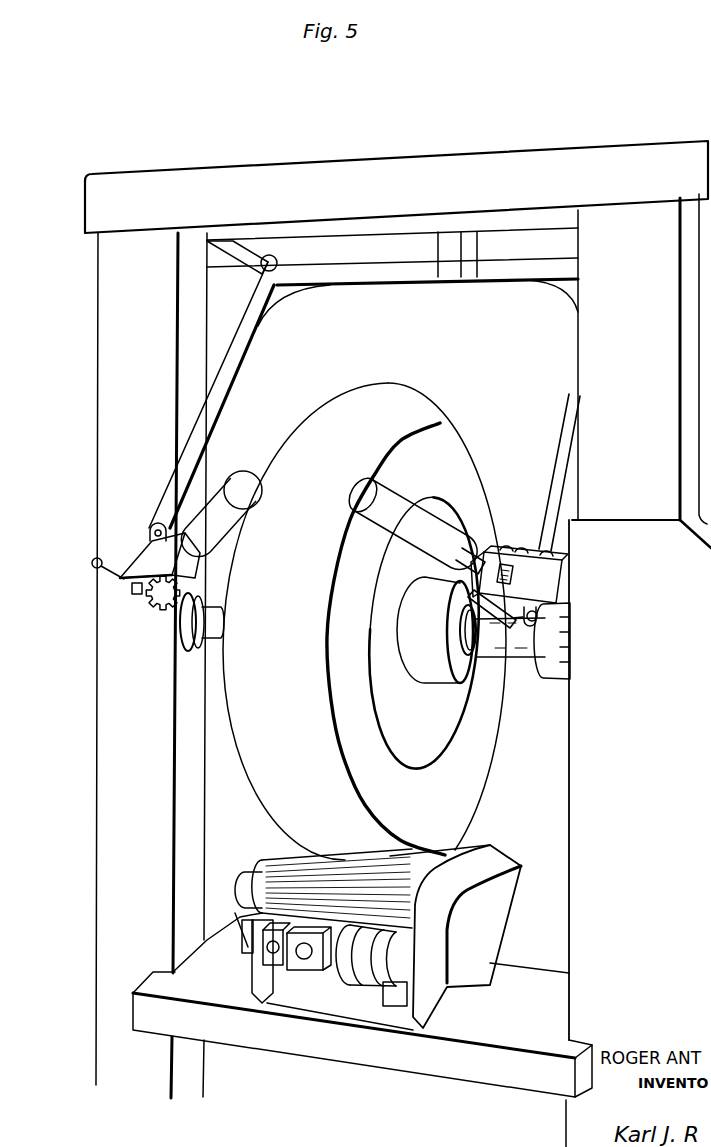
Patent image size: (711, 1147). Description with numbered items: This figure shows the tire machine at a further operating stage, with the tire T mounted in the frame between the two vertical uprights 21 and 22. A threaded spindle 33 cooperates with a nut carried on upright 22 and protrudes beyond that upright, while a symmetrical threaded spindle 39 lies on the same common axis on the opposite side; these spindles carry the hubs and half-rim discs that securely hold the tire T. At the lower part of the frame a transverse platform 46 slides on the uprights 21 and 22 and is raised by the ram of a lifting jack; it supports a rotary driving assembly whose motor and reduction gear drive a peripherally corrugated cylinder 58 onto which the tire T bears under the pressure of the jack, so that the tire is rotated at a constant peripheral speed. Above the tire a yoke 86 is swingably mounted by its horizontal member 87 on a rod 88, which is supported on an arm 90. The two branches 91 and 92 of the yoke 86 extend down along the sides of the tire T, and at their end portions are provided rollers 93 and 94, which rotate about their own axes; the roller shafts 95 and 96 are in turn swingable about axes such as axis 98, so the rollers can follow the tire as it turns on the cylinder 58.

The vertical upright 21 is at (131, 276).
The vertical upright 22 is at (653, 222).
The threaded spindle 33 is at (515, 640).
The threaded spindle 39 is at (215, 626).
The transverse platform 46 is at (370, 1046).
The peripherally corrugated cylinder 58 is at (283, 880).
The yoke 86 is at (436, 288).
The horizontal member 87 is at (316, 277).
The rod 88 is at (263, 258).
The arm 90 is at (233, 250).
The branch of yoke 91 is at (567, 463).
The branch of yoke 92 is at (229, 368).
The roller 93 is at (422, 530).
The roller 94 is at (239, 489).
The roller shaft 95 is at (470, 545).
The roller shaft 96 is at (140, 548).
The swing axis 98 is at (158, 599).
The tire T is at (435, 808).